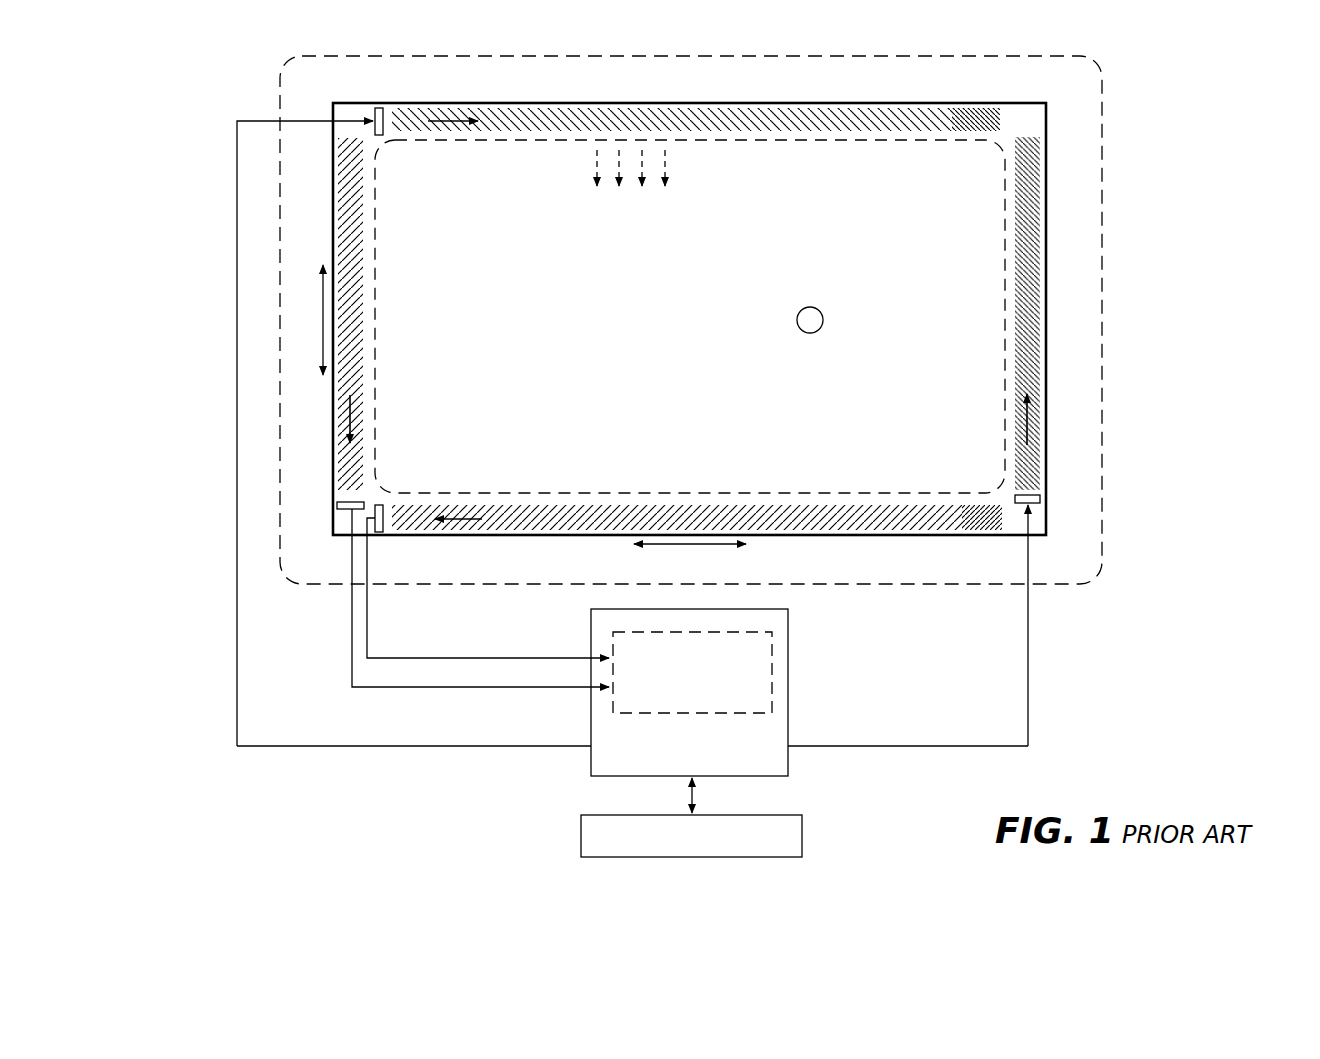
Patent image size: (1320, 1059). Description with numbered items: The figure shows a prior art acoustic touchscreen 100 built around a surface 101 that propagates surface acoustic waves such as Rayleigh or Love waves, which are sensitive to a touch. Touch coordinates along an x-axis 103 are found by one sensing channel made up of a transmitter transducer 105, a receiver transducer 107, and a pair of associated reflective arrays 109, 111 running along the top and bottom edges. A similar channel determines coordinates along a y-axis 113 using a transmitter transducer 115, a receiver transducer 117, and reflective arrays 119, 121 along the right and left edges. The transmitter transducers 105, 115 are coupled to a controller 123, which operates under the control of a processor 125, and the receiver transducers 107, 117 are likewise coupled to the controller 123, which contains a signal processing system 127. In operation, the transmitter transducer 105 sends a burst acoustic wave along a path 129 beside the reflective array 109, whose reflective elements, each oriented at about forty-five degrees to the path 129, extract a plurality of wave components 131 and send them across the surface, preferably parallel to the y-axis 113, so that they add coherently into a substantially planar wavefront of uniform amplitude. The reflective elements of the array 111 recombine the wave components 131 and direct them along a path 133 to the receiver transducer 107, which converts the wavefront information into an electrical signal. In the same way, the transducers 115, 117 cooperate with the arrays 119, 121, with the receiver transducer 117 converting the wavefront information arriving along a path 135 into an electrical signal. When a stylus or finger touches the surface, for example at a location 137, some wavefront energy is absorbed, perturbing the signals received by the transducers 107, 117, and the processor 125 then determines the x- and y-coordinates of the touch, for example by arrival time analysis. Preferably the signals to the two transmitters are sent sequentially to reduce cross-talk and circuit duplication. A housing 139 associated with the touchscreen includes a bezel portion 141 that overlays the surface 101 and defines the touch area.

The touchscreen 100 is at (794, 43).
The surface 101 is at (689, 319).
The x-axis 103 is at (720, 545).
The transmitter transducer 105 is at (378, 108).
The receiver transducer 107 is at (383, 532).
The reflective array 109 is at (848, 130).
The reflective array 111 is at (675, 510).
The y-axis 113 is at (323, 353).
The transmitter transducer 115 is at (1040, 498).
The receiver transducer 117 is at (337, 505).
The reflective array 119 is at (1017, 311).
The reflective array 121 is at (360, 313).
The controller 123 is at (790, 692).
The processor 125 is at (803, 830).
The signal processing system 127 is at (800, 652).
The path 129 is at (460, 121).
The wave components 131 is at (590, 163).
The path 133 is at (466, 512).
The path 135 is at (356, 415).
The location 137 is at (815, 311).
The housing 139 is at (487, 56).
The bezel portion 141 is at (563, 493).